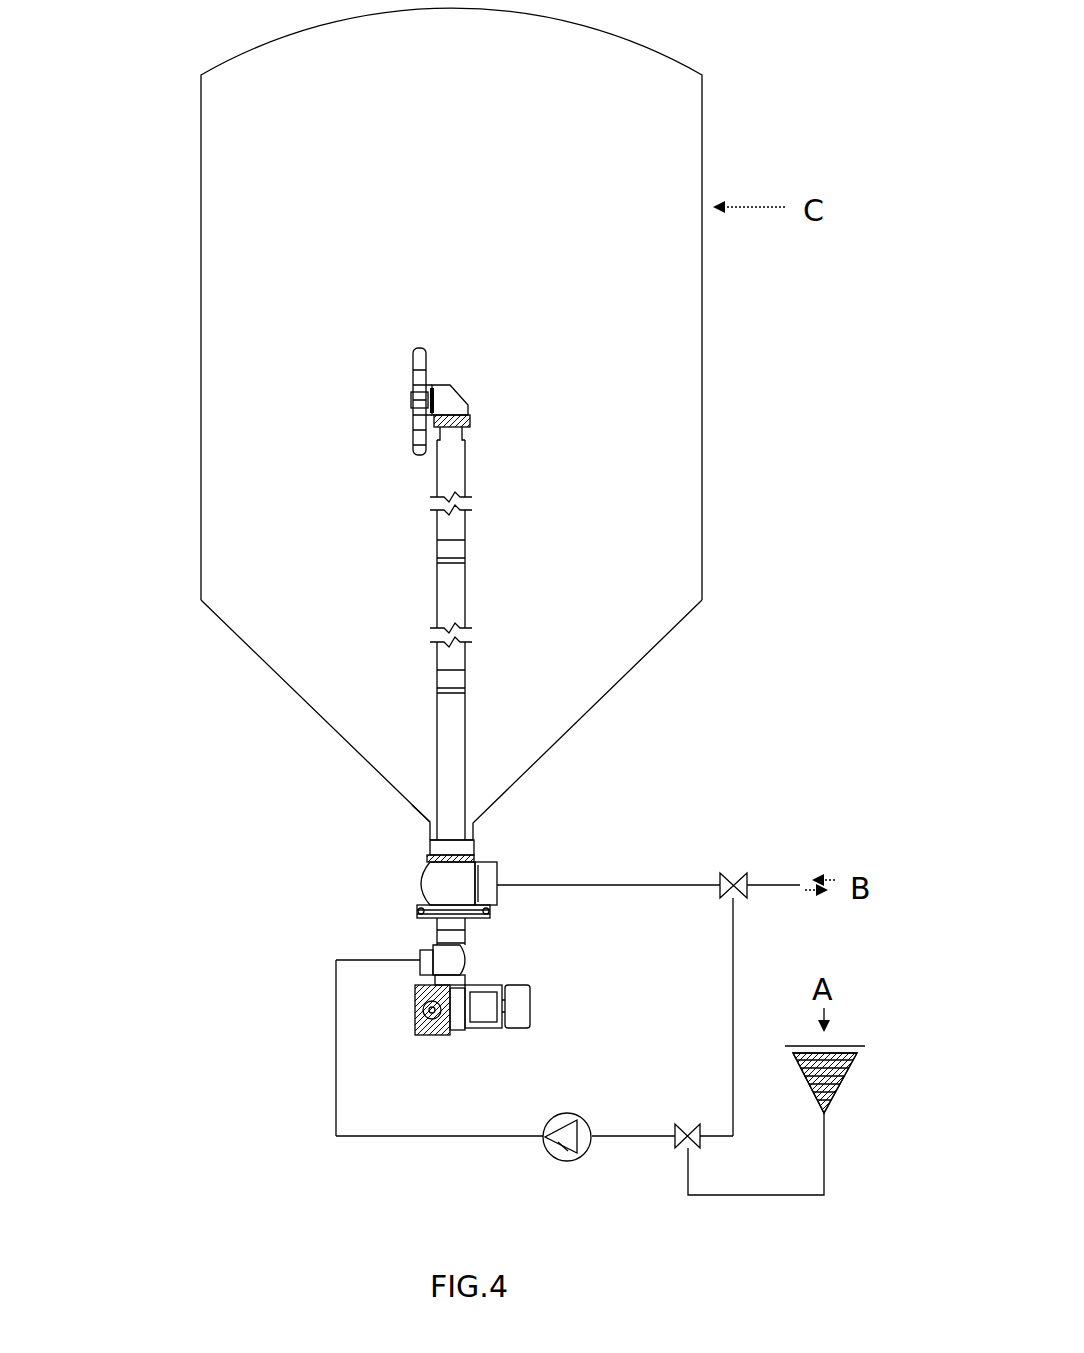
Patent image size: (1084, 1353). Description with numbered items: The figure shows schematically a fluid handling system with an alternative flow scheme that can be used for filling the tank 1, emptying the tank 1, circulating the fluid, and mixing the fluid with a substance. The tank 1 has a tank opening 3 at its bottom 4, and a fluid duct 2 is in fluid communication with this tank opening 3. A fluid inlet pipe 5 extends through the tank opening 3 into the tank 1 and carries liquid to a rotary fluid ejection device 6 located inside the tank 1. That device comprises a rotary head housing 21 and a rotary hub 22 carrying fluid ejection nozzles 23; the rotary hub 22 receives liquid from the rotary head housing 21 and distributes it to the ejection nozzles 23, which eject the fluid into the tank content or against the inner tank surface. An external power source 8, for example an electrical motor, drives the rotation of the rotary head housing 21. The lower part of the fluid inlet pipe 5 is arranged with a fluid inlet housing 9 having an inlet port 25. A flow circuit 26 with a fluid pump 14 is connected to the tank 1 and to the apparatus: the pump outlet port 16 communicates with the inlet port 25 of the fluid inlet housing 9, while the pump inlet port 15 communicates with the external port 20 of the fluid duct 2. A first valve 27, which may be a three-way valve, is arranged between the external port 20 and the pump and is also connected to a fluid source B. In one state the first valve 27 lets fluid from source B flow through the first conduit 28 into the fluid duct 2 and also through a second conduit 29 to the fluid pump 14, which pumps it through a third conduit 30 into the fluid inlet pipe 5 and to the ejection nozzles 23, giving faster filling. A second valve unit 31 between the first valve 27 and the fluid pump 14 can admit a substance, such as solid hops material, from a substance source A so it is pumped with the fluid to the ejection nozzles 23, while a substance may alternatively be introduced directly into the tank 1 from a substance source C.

The tank 1 is at (685, 276).
The fluid duct 2 is at (497, 862).
The tank opening 3 is at (430, 832).
The bottom 4 is at (430, 820).
The fluid inlet pipe 5 is at (455, 782).
The rotary fluid ejection device 6 is at (447, 420).
The external power source 8 is at (530, 1008).
The fluid inlet housing 9 is at (447, 950).
The fluid pump 14 is at (560, 1160).
The pump inlet port 15 is at (590, 1140).
The pump outlet port 16 is at (545, 1135).
The external port 20 is at (497, 877).
The rotary head housing 21 is at (437, 398).
The rotary hub 22 is at (413, 403).
The fluid ejection nozzles 23 is at (415, 450).
The inlet port 25 is at (425, 958).
The flow circuit 26 is at (287, 1062).
The first valve 27 is at (733, 875).
The first conduit 28 is at (693, 885).
The second conduit 29 is at (733, 925).
The third conduit 30 is at (336, 1113).
The second valve unit 31 is at (677, 1148).